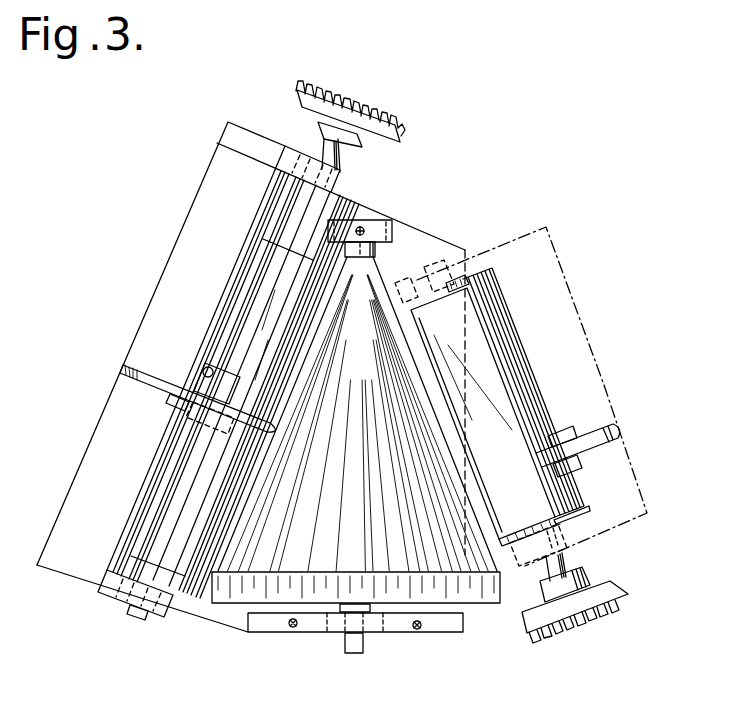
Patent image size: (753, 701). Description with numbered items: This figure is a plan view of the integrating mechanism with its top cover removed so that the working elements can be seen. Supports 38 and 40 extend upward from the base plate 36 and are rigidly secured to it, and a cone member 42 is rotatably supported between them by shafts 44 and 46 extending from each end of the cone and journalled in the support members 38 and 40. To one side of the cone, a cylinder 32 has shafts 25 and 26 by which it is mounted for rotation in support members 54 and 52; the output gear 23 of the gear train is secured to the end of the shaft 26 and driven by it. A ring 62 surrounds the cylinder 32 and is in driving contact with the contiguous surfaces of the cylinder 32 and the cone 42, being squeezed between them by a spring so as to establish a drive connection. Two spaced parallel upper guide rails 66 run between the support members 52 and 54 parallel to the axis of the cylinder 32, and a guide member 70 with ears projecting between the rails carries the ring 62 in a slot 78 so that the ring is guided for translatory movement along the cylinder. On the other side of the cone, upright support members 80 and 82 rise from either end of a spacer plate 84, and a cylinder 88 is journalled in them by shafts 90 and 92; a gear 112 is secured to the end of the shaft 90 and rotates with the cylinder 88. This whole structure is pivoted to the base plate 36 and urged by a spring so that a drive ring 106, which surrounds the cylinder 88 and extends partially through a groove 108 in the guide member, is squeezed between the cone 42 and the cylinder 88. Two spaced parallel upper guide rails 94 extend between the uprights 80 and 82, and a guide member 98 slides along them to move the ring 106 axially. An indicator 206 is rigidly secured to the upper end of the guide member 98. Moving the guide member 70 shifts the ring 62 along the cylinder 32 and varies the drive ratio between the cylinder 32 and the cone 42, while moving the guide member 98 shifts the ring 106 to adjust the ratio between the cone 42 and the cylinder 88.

The output gear 23 is at (545, 637).
The shaft 25 is at (433, 258).
The shaft 26 is at (572, 558).
The cylinder 32 is at (488, 383).
The base plate 36 is at (232, 617).
The support member 38 is at (388, 226).
The support member 40 is at (440, 630).
The cone member 42 is at (323, 548).
The shaft 44 is at (366, 226).
The shaft 46 is at (353, 647).
The support member 52 is at (652, 507).
The support member 54 is at (507, 235).
The ring 62 is at (612, 430).
The upper guide rails 66 is at (580, 537).
The guide member 70 is at (575, 470).
The slot 78 is at (578, 446).
The upright support member 80 is at (293, 152).
The upright support member 82 is at (104, 590).
The spacer plate 84 is at (217, 170).
The cylinder 88 is at (280, 262).
The shaft 90 is at (342, 196).
The shaft 92 is at (140, 612).
The upper guide rails 94 is at (290, 193).
The guide member 98 is at (172, 410).
The drive ring 106 is at (123, 367).
The groove 108 is at (193, 360).
The gear 112 is at (400, 120).
The indicator 206 is at (232, 420).